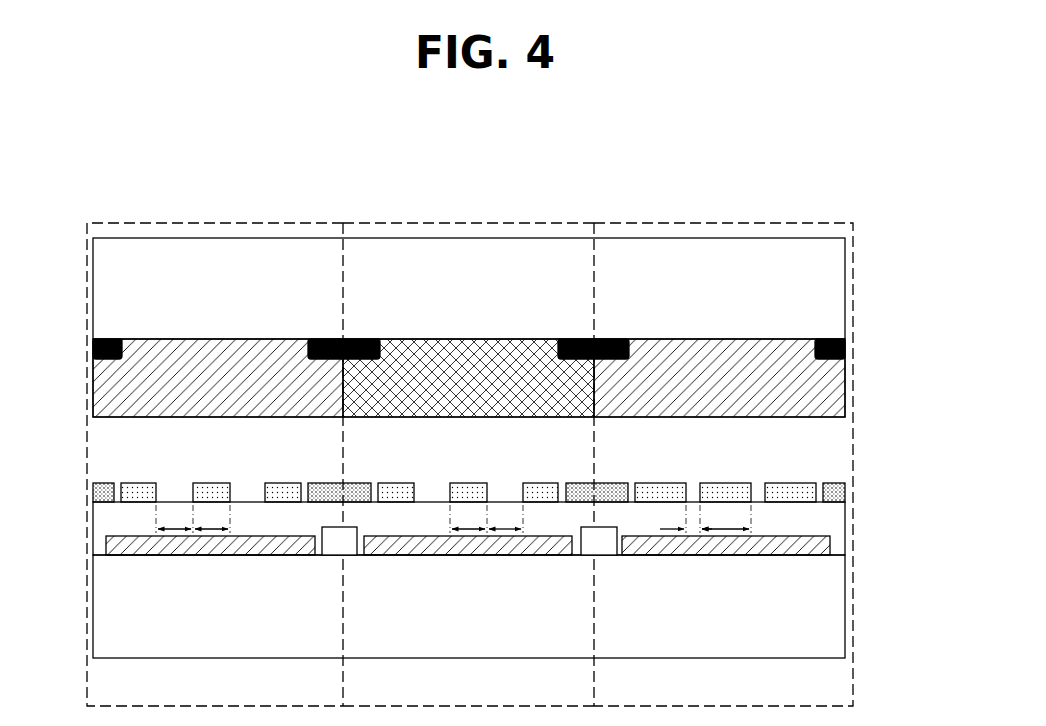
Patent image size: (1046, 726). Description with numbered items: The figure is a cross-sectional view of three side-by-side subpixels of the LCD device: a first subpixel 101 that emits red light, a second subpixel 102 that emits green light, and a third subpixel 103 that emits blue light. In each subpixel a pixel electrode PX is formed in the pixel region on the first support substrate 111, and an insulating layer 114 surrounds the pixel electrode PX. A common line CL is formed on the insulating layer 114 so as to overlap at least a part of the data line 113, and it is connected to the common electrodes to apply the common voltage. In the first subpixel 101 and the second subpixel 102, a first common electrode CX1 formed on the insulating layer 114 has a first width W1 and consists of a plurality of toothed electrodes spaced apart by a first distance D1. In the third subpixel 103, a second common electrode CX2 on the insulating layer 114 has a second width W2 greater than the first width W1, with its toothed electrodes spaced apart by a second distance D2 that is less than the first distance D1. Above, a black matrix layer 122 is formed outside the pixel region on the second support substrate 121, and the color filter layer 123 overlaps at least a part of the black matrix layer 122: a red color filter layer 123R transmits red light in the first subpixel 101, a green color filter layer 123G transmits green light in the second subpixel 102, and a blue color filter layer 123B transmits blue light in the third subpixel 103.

The first subpixel 101 is at (274, 223).
The second subpixel 102 is at (496, 223).
The third subpixel 103 is at (720, 223).
The first support substrate 111 is at (837, 608).
The data line 113 is at (350, 557).
The insulating layer 114 is at (837, 518).
The second support substrate 121 is at (833, 275).
The black matrix layer 122 is at (115, 339).
The color filter layer 123 is at (509, 352).
The red color filter layer 123R is at (232, 348).
The green color filter layer 123G is at (477, 348).
The blue color filter layer 123B is at (722, 348).
The pixel electrode PX is at (228, 548).
The common line CL is at (105, 483).
The first common electrode CX1 is at (285, 483).
The second common electrode CX2 is at (800, 483).
The first distance D1 is at (339, 518).
The first width W1 is at (340, 518).
The second distance D2 is at (685, 518).
The second width W2 is at (726, 518).